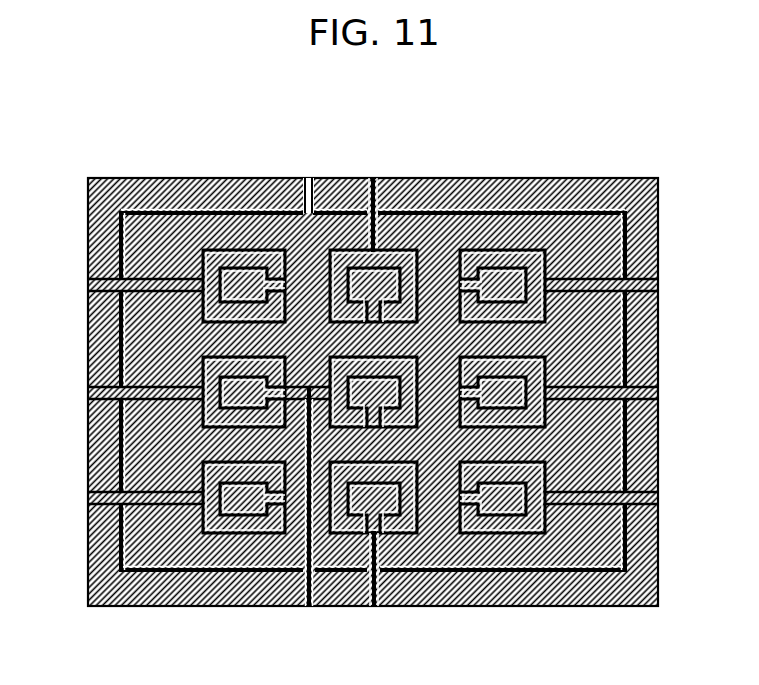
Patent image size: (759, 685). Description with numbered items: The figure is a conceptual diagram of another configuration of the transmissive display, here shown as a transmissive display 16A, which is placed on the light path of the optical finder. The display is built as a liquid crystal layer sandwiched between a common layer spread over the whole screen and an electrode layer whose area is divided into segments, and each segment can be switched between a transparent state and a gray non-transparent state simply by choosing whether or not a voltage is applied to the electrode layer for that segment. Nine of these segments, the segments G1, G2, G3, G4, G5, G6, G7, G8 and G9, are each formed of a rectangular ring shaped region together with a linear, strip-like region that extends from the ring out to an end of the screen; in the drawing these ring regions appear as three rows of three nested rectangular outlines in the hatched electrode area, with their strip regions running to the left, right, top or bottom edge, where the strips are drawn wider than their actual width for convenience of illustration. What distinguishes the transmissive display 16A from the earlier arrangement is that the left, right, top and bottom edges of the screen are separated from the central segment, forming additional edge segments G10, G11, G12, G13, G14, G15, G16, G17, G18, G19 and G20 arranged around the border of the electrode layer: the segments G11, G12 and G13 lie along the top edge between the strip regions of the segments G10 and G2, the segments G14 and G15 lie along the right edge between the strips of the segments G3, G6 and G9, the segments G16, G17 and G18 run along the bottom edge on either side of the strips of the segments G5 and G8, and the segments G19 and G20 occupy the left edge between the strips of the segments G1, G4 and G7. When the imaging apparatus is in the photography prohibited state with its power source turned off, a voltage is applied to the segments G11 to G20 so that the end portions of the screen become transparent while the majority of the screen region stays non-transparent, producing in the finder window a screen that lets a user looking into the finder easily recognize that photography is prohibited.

The transmissive display 16A is at (729, 92).
The segment G1 is at (88, 287).
The segment G2 is at (373, 187).
The segment G3 is at (658, 286).
The segment G4 is at (88, 393).
The segment G5 is at (308, 606).
The segment G6 is at (658, 391).
The segment G7 is at (88, 498).
The segment G8 is at (373, 606).
The segment G9 is at (658, 497).
The segment G10 is at (307, 185).
The segment G11 is at (170, 187).
The segment G12 is at (332, 187).
The segment G13 is at (507, 187).
The segment G14 is at (658, 336).
The segment G15 is at (658, 440).
The segment G16 is at (508, 606).
The segment G17 is at (332, 606).
The segment G18 is at (170, 606).
The segment G19 is at (88, 441).
The segment G20 is at (88, 338).